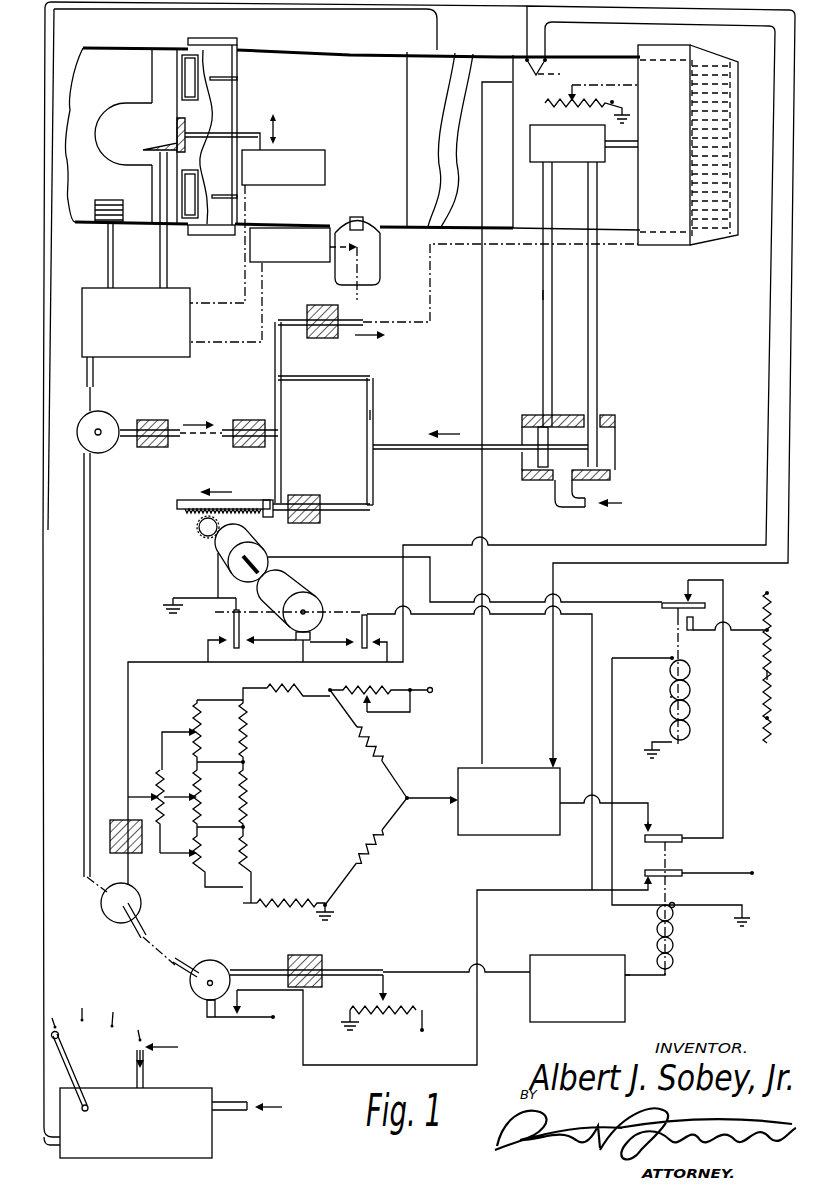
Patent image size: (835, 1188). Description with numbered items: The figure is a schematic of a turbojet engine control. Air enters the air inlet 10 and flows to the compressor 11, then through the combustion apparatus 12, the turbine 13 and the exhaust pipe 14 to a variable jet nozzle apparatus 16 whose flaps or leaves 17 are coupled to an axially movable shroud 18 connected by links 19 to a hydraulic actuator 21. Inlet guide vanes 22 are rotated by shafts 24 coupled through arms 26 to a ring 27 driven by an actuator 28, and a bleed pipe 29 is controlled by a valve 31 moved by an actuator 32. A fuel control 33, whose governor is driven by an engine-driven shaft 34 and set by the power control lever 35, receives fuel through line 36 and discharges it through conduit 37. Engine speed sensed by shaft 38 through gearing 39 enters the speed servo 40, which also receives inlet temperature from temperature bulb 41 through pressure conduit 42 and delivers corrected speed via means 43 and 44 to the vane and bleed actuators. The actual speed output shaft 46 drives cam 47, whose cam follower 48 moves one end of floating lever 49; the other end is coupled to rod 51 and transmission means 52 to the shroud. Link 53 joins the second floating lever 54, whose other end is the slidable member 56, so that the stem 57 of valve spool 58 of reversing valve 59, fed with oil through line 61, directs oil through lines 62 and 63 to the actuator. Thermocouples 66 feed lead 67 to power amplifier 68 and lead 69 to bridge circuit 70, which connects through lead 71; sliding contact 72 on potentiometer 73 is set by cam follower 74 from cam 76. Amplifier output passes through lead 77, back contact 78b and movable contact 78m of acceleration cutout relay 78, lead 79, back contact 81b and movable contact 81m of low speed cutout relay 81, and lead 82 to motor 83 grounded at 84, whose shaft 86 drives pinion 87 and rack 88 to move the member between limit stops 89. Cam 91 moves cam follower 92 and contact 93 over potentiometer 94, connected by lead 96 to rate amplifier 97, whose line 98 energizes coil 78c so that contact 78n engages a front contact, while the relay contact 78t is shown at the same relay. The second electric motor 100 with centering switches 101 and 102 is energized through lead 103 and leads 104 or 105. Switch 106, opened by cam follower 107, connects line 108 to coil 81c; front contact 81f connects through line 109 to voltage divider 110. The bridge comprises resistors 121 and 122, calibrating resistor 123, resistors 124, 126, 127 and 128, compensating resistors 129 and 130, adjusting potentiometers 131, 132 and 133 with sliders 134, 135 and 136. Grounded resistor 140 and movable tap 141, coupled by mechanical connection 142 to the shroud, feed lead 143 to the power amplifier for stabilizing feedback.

The air inlet 10 is at (137, 48).
The compressor 11 is at (285, 12).
The combustion apparatus 12 is at (455, 54).
The turbine 13 is at (476, 54).
The exhaust pipe 14 is at (594, 57).
The variable jet nozzle apparatus 16 is at (724, 54).
The flaps or leaves 17 is at (722, 142).
The shroud 18 is at (665, 247).
The links 19 is at (626, 150).
The actuator 21 is at (544, 165).
The inlet guide vanes 22 is at (188, 60).
The shafts 24 is at (212, 32).
The arms 26 is at (238, 38).
The ring 27 is at (238, 110).
The actuator 28 is at (300, 150).
The bleed pipe 29 is at (378, 262).
The valve 31 is at (368, 283).
The actuator 32 is at (298, 228).
The fuel control 33 is at (94, 1090).
The shaft 34 is at (152, 1078).
The power control lever 35 is at (70, 1064).
The line 36 is at (247, 1104).
The conduit 37 is at (45, 936).
The shaft 38 is at (161, 272).
The gearing 39 is at (168, 142).
The speed servo 40 is at (84, 335).
The temperature bulb 41 is at (106, 200).
The pressure conduit 42 is at (107, 268).
The means 43 is at (226, 303).
The means 44 is at (240, 343).
The actual speed output shaft 46 is at (90, 362).
The cam 47 is at (92, 440).
The cam follower 48 is at (152, 420).
The floating lever 49 is at (283, 414).
The rod 51 is at (318, 308).
The transmission means 52 is at (432, 320).
The link 53 is at (366, 400).
The floating lever 54 is at (374, 420).
The slidable member 56 is at (373, 512).
The stem 57 is at (425, 451).
The valve spool 58 is at (605, 463).
The reversing valve 59 is at (597, 421).
The line 61 is at (565, 500).
The line 62 is at (545, 290).
The line 63 is at (597, 300).
The thermocouples 66 is at (553, 70).
The lead 67 is at (790, 292).
The power amplifier 68 is at (504, 836).
The lead 69 is at (768, 400).
The bridge circuit 70 is at (197, 699).
The lead 71 is at (410, 806).
The sliding contact 72 is at (147, 797).
The potentiometer 73 is at (160, 768).
The cam follower 74 is at (132, 855).
The cam 76 is at (142, 903).
The lead 77 is at (648, 804).
The acceleration cutout relay 78 is at (672, 927).
The back contact 78b is at (660, 830).
The coil 78c is at (672, 966).
The movable contact 78m is at (680, 844).
The contact 78n is at (682, 877).
The relay contact 78t is at (646, 890).
The lead 79 is at (720, 708).
The low speed cutout relay 81 is at (670, 698).
The back contact 81b is at (678, 602).
The coil 81c is at (668, 734).
The front contact 81f is at (694, 620).
The movable contact 81m is at (677, 614).
The lead 82 is at (400, 545).
The motor 83 is at (266, 554).
The ground 84 is at (184, 598).
The shaft 86 is at (220, 556).
The pinion 87 is at (200, 532).
The rack 88 is at (180, 506).
The limit stops 89 is at (305, 497).
The cam 91 is at (220, 962).
The cam follower 92 is at (340, 970).
The contact 93 is at (378, 1004).
The potentiometer 94 is at (370, 1013).
The lead 96 is at (521, 972).
The rate amplifier 97 is at (590, 955).
The line 98 is at (630, 978).
The electric motor 100 is at (305, 590).
The switch 101 is at (368, 616).
The switch 102 is at (233, 632).
The lead 103 is at (611, 906).
The lead 104 is at (361, 642).
The lead 105 is at (208, 656).
The switch 106 is at (240, 1000).
The cam follower 107 is at (207, 1006).
The line 108 is at (652, 656).
The line 109 is at (764, 630).
The voltage divider 110 is at (768, 682).
The voltage dividing resistor 121 is at (367, 745).
The voltage dividing resistor 122 is at (358, 862).
The variable calibrating resistor 123 is at (386, 692).
The resistor 124 is at (282, 690).
The resistor 126 is at (248, 740).
The resistor 127 is at (248, 790).
The resistor 128 is at (248, 852).
The temperature compensating resistor 129 is at (252, 902).
The temperature compensating resistor 130 is at (282, 904).
The control characteristic adjusting potentiometer 131 is at (214, 731).
The control characteristic adjusting potentiometer 132 is at (219, 794).
The control characteristic adjusting potentiometer 133 is at (218, 857).
The slider 134 is at (179, 735).
The slider 135 is at (180, 783).
The slider 136 is at (178, 840).
The grounded resistor 140 is at (614, 102).
The movable tap 141 is at (568, 92).
The mechanical connection 142 is at (585, 85).
The lead 143 is at (484, 303).